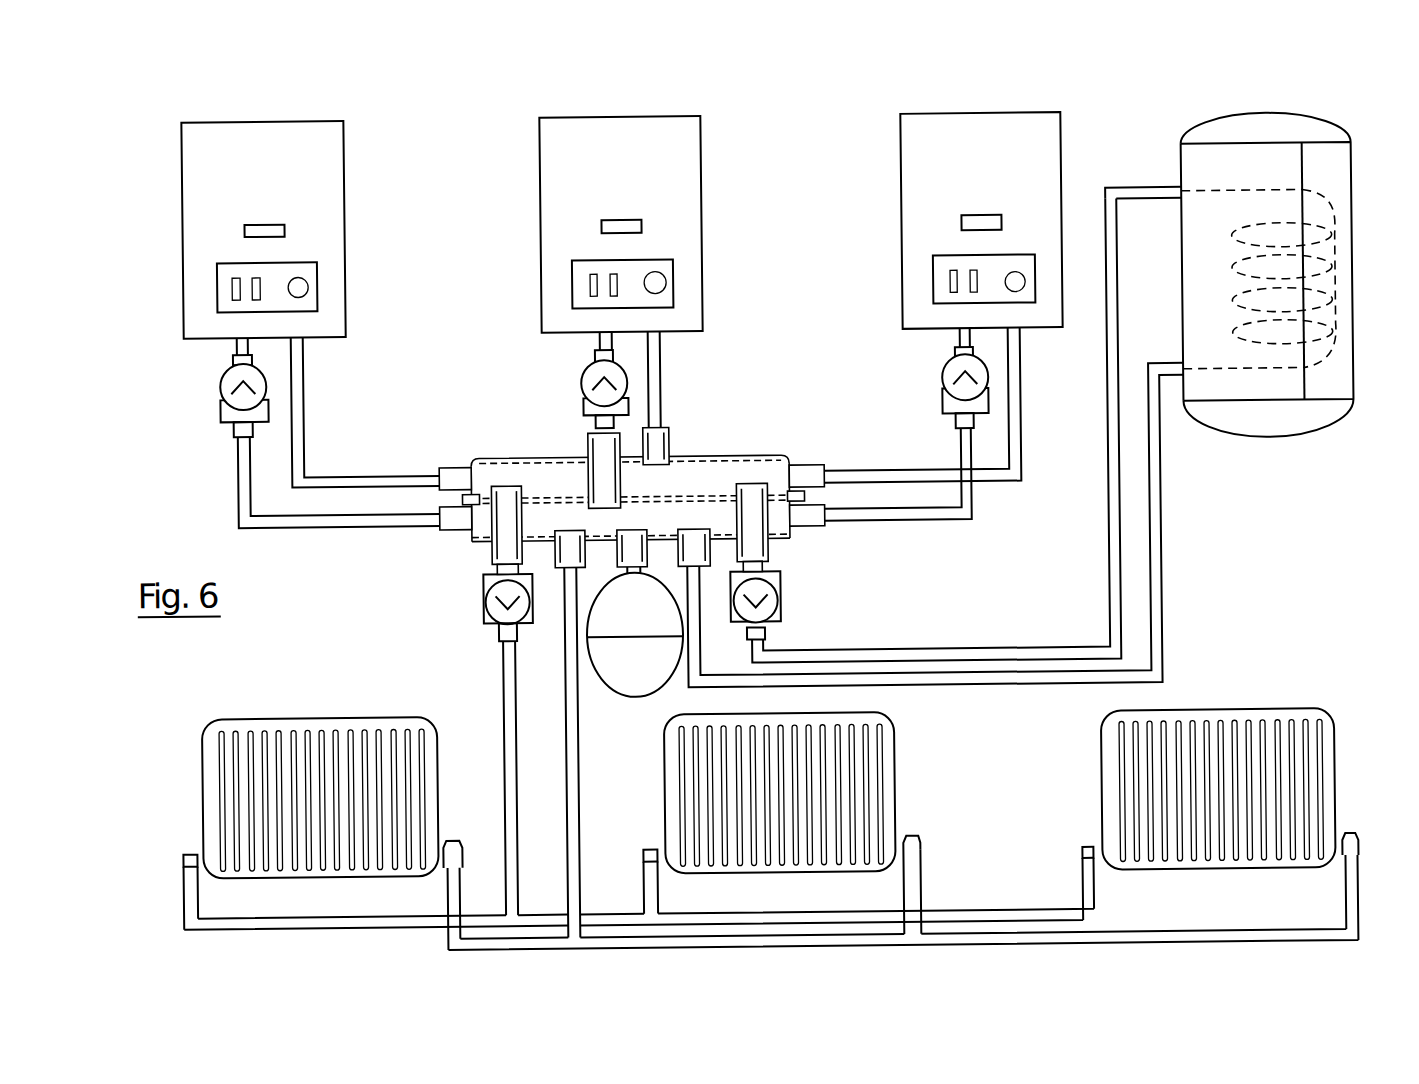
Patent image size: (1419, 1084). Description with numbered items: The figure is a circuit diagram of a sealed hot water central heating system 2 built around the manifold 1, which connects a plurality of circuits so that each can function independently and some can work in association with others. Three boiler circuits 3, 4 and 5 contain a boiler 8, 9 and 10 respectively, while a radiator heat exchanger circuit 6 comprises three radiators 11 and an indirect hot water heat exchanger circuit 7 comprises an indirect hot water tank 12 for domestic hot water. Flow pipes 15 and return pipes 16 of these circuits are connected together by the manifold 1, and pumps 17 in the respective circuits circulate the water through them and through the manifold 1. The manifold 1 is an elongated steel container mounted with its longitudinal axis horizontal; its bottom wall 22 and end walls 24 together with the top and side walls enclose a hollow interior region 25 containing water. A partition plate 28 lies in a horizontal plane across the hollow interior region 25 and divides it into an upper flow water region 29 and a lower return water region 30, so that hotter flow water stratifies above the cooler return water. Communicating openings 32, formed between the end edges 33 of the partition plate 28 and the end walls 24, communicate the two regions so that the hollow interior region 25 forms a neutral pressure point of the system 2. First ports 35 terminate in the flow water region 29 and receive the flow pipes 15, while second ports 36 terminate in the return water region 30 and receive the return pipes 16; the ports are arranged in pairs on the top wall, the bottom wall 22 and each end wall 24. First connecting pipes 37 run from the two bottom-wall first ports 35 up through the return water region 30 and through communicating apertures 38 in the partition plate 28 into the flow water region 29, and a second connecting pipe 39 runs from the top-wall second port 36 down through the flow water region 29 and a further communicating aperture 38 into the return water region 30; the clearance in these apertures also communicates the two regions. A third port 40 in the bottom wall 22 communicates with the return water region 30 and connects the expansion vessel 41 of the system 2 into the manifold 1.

The manifold 1 is at (632, 485).
The sealed hot water central heating system 2 is at (1378, 164).
The boiler circuit 3 is at (340, 413).
The boiler circuit 4 is at (681, 407).
The boiler circuit 5 is at (887, 419).
The radiator heat exchanger circuit 6 is at (345, 689).
The indirect hot water heat exchanger circuit 7 is at (1181, 578).
The boiler 8 is at (336, 280).
The boiler 9 is at (700, 287).
The boiler 10 is at (918, 287).
The radiator 11 is at (435, 805).
The indirect hot water tank 12 is at (1182, 177).
The flow pipe 15 is at (657, 380).
The return pipe 16 is at (597, 347).
The pump 17 is at (233, 405).
The bottom wall 22 is at (636, 547).
The end wall 24 is at (465, 495).
The hollow interior region 25 is at (761, 461).
The partition plate 28 is at (706, 500).
The flow water region 29 is at (718, 460).
The return water region 30 is at (501, 546).
The communicating opening 32 is at (498, 495).
The end edge 33 is at (514, 495).
The first port 35 is at (456, 472).
The second port 36 is at (591, 461).
The first connecting pipe 37 is at (522, 508).
The communicating aperture 38 is at (536, 494).
The second connecting pipe 39 is at (630, 483).
The third port 40 is at (629, 534).
The expansion vessel 41 is at (640, 684).